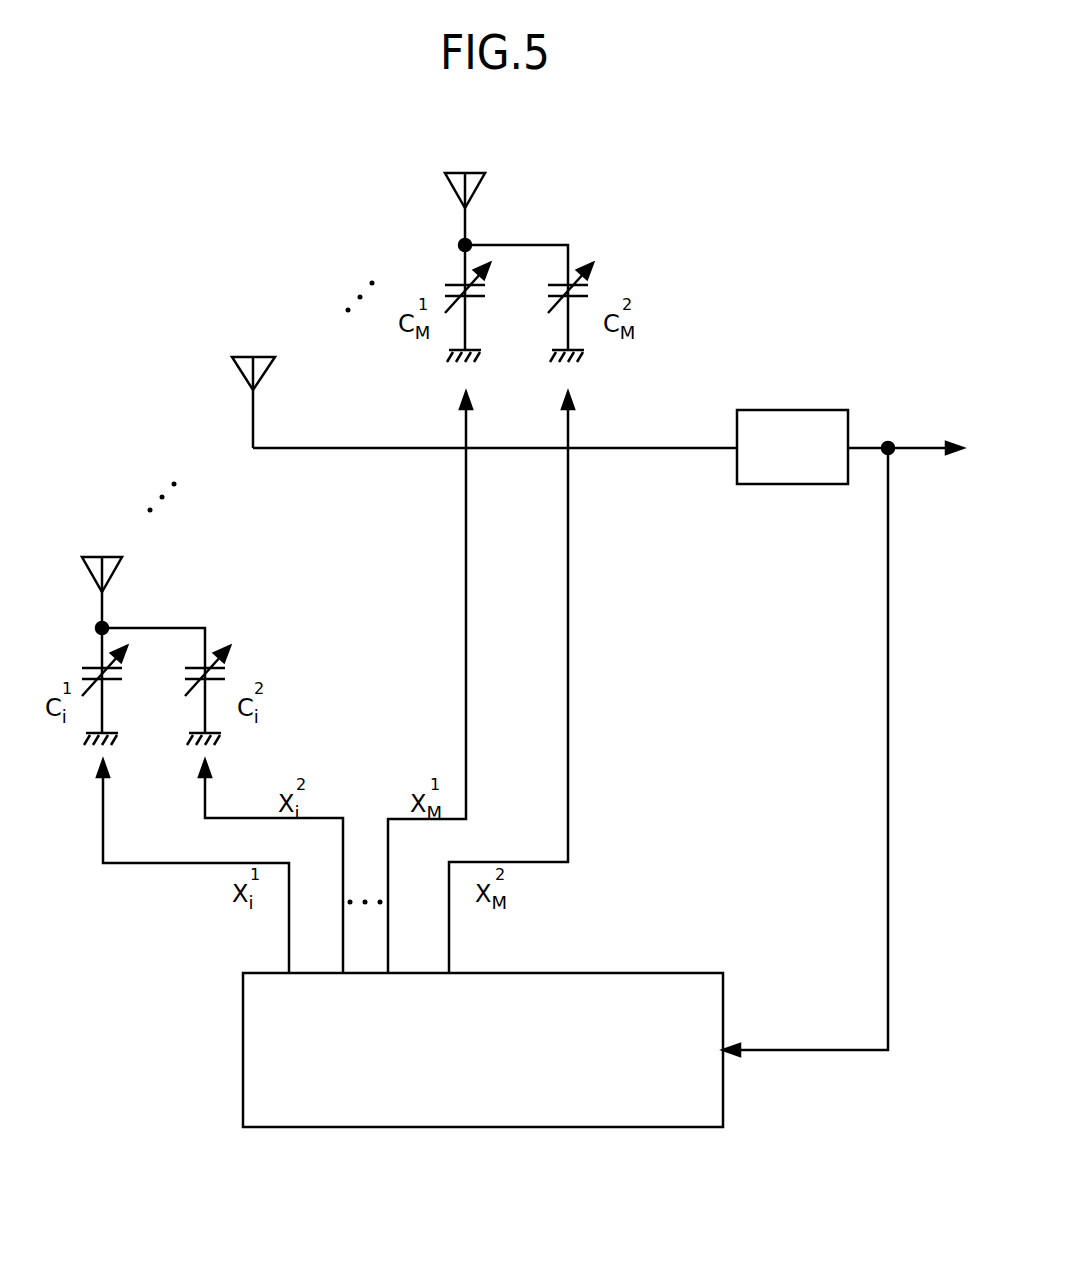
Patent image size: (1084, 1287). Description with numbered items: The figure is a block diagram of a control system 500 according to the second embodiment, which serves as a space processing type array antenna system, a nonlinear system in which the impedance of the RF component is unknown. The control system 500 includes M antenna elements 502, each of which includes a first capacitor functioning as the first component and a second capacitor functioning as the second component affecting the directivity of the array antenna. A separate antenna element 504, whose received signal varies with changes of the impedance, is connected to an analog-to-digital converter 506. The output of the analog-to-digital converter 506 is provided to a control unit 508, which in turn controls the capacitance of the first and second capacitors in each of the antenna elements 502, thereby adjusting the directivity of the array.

The control system 500 is at (218, 185).
The antenna elements 502 is at (468, 215).
The antenna element 504 is at (256, 398).
The analog-to-digital converter 506 is at (790, 410).
The control unit 508 is at (615, 973).